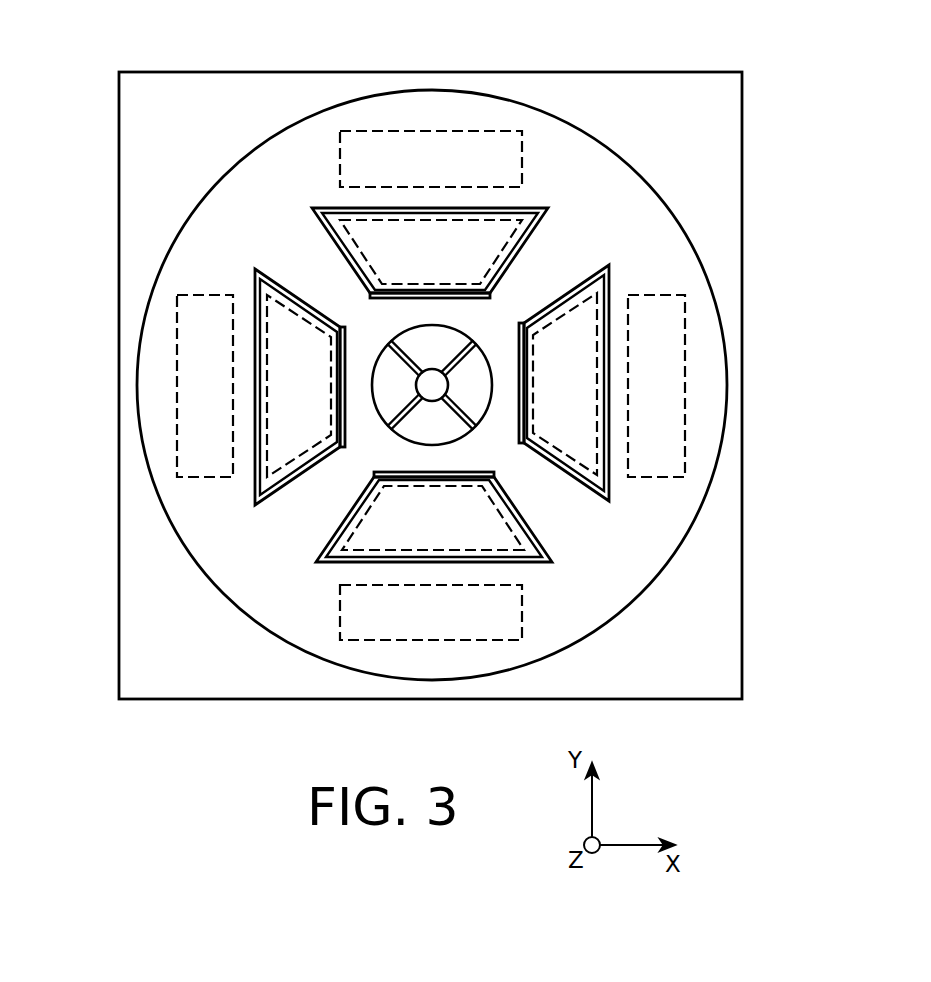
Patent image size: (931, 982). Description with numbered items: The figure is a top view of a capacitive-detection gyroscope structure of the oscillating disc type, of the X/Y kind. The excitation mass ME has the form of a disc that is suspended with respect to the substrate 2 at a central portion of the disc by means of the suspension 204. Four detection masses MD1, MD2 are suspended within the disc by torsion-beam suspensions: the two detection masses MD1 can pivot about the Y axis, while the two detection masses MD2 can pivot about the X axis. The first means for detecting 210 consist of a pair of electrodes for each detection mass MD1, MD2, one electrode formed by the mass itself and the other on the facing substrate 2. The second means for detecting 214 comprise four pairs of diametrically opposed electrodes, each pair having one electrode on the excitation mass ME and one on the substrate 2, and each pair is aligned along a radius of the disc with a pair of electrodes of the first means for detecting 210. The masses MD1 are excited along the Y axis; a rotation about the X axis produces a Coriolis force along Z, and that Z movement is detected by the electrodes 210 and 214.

The substrate 2 is at (552, 81).
The excitation mass ME is at (589, 150).
The suspension 204 is at (428, 377).
The detection mass MD1 is at (283, 358).
The detection mass MD2 is at (417, 247).
The first means for detecting 210 is at (347, 545).
The second means for detecting 214 is at (662, 478).